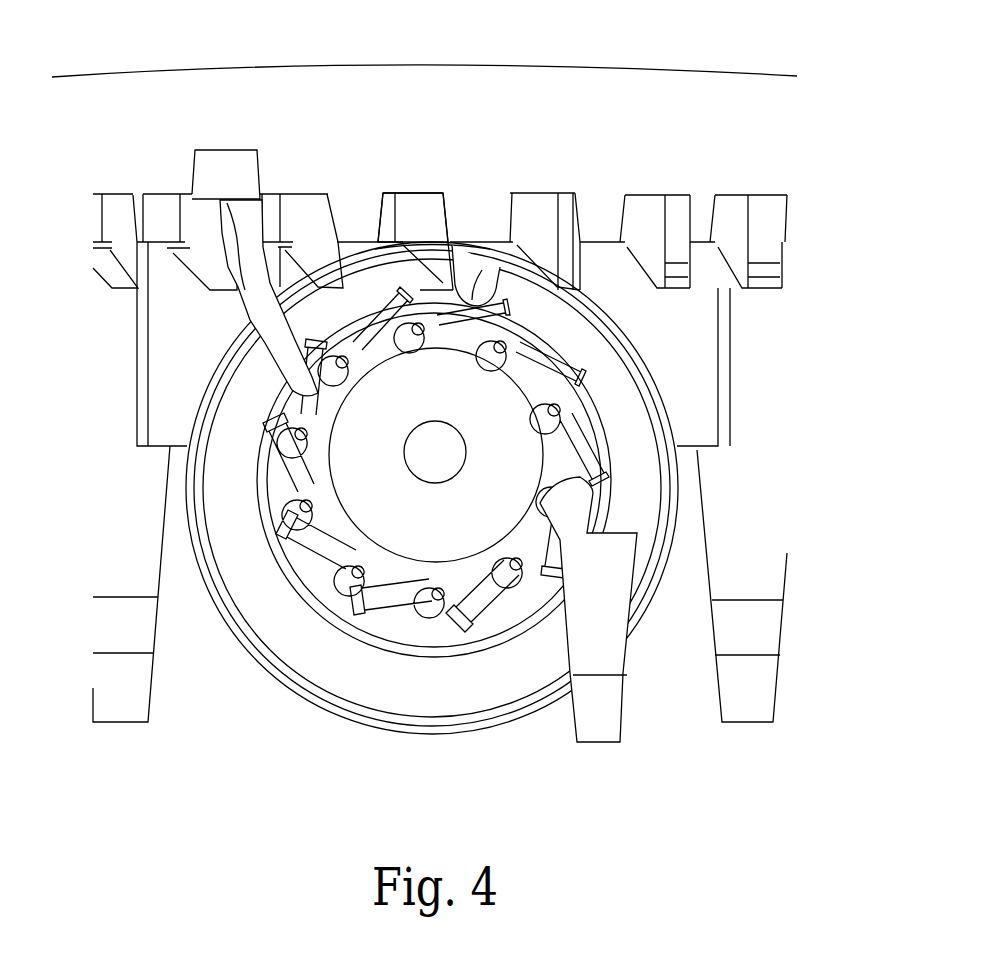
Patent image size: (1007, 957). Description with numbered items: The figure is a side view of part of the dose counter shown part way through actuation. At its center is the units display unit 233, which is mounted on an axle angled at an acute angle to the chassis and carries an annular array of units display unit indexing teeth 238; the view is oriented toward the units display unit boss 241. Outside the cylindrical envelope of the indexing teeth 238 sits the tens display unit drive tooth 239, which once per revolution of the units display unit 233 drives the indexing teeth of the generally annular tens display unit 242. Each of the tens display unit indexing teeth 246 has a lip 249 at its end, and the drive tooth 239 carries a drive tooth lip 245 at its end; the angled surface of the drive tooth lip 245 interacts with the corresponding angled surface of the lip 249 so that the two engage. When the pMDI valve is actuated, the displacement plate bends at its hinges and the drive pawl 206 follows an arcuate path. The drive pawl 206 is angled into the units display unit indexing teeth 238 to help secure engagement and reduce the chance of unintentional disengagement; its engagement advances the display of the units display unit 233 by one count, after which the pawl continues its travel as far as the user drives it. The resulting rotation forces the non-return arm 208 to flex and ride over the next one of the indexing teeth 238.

The drive pawl 206 is at (272, 327).
The non-return arm 208 is at (598, 573).
The units display unit 233 is at (463, 702).
The units display unit indexing teeth 238 is at (293, 535).
The tens display unit drive tooth 239 is at (580, 302).
The units display unit boss 241 is at (457, 467).
The tens display unit 242 is at (723, 108).
The drive tooth lip 245 is at (460, 282).
The tens display unit indexing teeth 246 is at (420, 213).
The lip 249 is at (450, 281).